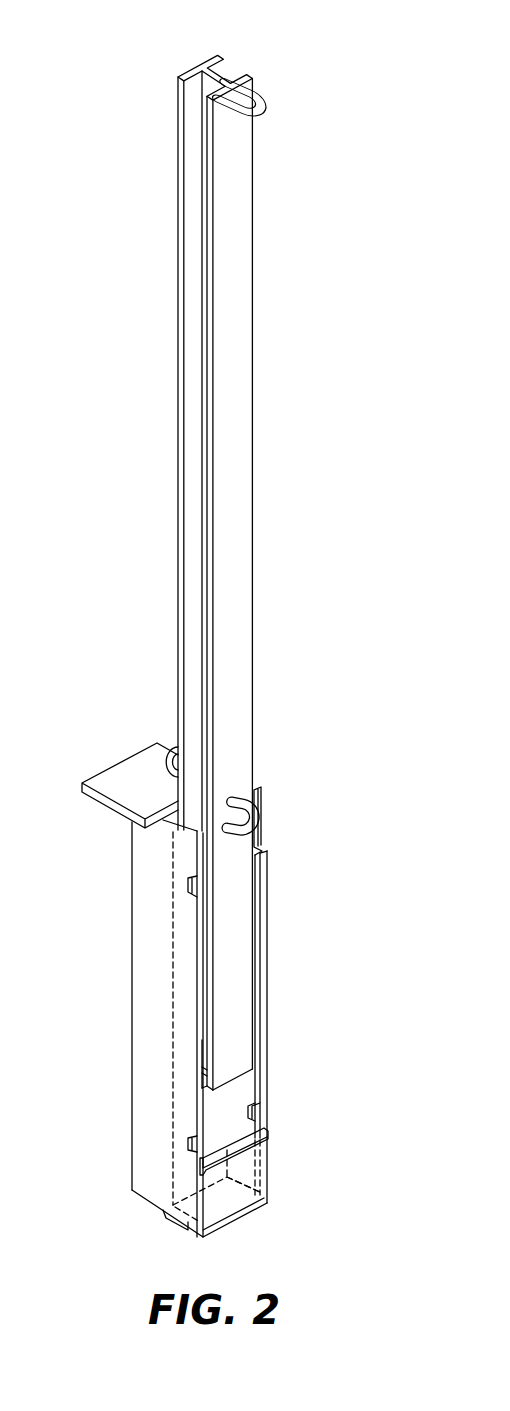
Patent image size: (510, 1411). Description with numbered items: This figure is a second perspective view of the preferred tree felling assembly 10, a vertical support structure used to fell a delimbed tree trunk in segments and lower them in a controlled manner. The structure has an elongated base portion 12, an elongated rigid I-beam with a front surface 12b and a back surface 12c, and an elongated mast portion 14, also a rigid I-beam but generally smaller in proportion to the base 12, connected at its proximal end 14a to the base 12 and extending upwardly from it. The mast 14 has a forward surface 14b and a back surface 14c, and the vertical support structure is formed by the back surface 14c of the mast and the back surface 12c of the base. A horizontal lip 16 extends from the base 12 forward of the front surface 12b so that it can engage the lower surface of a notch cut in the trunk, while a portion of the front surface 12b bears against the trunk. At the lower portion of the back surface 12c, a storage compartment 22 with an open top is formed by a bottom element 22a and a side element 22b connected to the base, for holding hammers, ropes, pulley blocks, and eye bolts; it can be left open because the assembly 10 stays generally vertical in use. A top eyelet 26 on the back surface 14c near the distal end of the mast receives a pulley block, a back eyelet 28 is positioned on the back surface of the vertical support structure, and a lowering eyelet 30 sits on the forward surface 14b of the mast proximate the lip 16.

The tree felling assembly 10 is at (78, 454).
The base portion 12 is at (124, 1036).
The front surface 12b is at (130, 922).
The back surface 12c is at (262, 910).
The mast portion 14 is at (260, 451).
The proximal end 14a is at (233, 1058).
The forward surface 14b is at (178, 562).
The back surface 14c is at (235, 582).
The horizontal lip 16 is at (106, 776).
The storage compartment 22 is at (223, 1137).
The bottom element 22a is at (187, 1228).
The side element 22b is at (237, 1192).
The top eyelet 26 is at (278, 97).
The back eyelet 28 is at (262, 822).
The lowering eyelet 30 is at (170, 745).